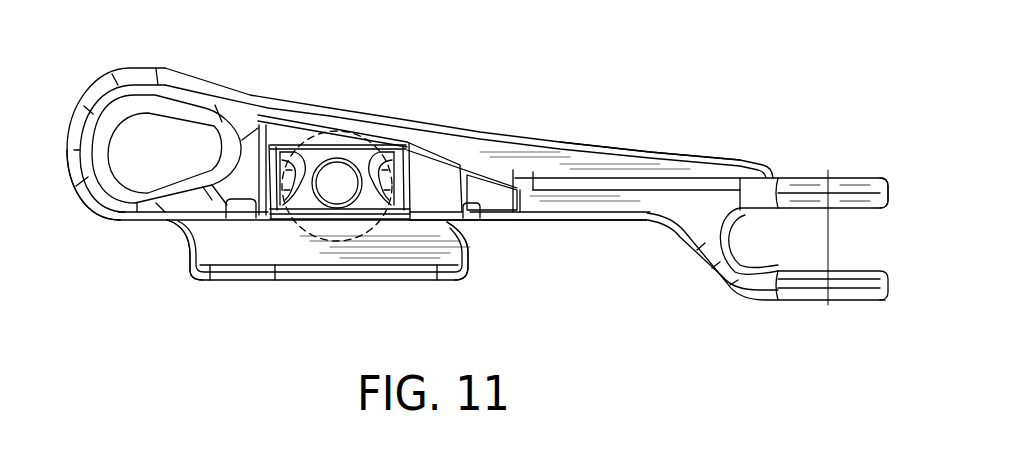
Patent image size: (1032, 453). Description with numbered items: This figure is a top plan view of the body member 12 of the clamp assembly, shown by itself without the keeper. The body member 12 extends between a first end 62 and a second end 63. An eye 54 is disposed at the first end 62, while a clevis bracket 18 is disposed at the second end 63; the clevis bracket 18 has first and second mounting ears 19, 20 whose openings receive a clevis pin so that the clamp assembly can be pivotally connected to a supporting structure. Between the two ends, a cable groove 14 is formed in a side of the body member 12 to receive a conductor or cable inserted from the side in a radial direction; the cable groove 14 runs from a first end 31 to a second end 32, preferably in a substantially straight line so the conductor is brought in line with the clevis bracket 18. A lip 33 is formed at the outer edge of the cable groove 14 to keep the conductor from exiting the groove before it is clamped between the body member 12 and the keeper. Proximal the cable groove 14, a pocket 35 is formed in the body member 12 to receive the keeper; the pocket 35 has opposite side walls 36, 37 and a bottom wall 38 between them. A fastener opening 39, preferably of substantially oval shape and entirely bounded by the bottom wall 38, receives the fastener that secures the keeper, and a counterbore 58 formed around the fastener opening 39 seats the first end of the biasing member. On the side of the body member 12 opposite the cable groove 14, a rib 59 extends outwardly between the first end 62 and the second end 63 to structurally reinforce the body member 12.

The body member 12 is at (413, 116).
The cable groove 14 is at (250, 250).
The clevis bracket 18 is at (736, 306).
The first mounting ear 19 is at (880, 178).
The second mounting ear 20 is at (881, 300).
The first end of cable groove 31 is at (207, 253).
The second end of cable groove 32 is at (440, 240).
The lip 33 is at (437, 268).
The pocket 35 is at (333, 185).
The side wall of pocket 36 is at (397, 166).
The side wall of pocket 37 is at (301, 180).
The bottom wall of pocket 38 is at (368, 180).
The fastener opening 39 is at (318, 207).
The eye 54 is at (132, 117).
The counterbore 58 is at (333, 190).
The rib 59 is at (618, 146).
The first end of body member 62 is at (82, 196).
The second end of body member 63 is at (890, 187).